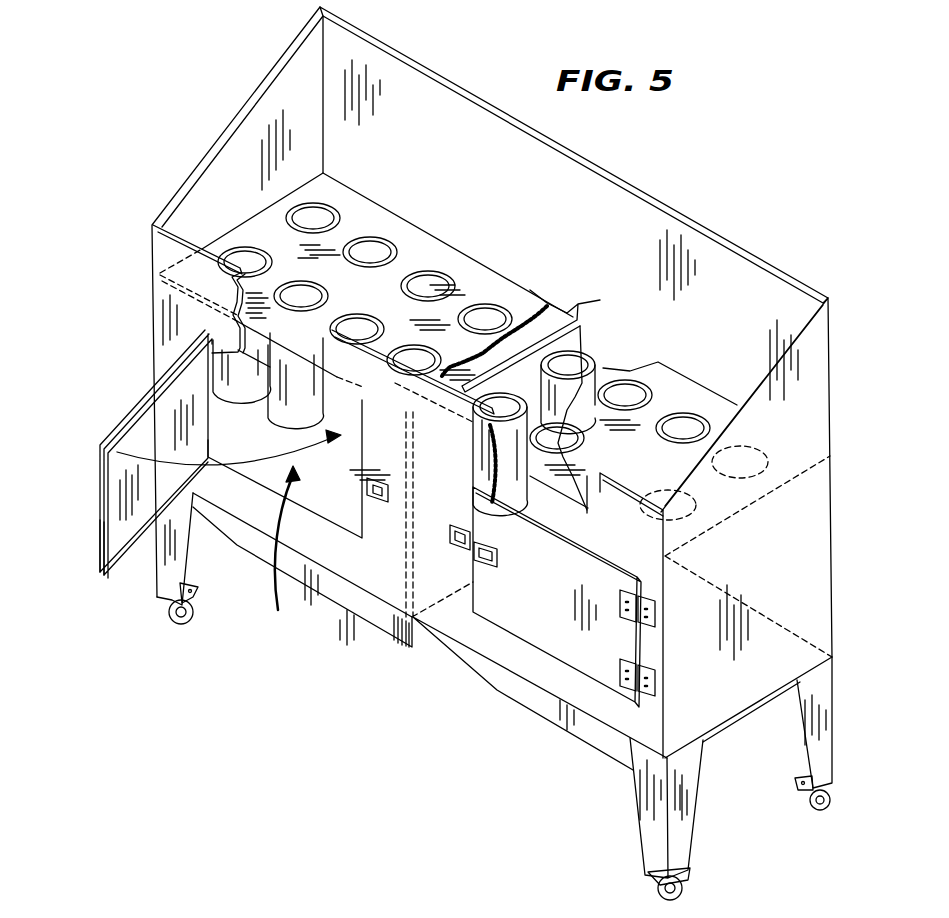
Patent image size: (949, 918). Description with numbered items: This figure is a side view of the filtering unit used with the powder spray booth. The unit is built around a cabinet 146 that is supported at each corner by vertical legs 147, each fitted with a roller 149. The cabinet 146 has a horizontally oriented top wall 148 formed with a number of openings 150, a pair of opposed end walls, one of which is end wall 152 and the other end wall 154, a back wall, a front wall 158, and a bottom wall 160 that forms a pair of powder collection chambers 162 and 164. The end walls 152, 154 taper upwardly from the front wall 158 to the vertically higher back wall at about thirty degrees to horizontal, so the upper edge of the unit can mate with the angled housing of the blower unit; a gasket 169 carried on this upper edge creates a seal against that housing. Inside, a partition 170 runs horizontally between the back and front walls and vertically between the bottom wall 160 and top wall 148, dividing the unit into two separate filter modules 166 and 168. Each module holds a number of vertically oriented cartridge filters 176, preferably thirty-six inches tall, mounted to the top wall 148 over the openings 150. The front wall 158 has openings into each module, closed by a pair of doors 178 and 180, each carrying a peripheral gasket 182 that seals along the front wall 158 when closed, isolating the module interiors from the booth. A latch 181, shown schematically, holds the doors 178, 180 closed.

The cabinet 146 is at (745, 151).
The vertical legs 147 is at (157, 578).
The top wall 148 is at (496, 276).
The roller 149 is at (178, 616).
The openings 150 is at (372, 250).
The end wall 152 is at (214, 145).
The end wall 154 is at (831, 370).
The front wall 158 is at (152, 333).
The bottom wall 160 is at (463, 622).
The powder collection chamber 162 is at (360, 616).
The powder collection chamber 164 is at (495, 690).
The filter module 166 is at (281, 559).
The filter module 168 is at (527, 483).
The gasket 169 is at (637, 190).
The partition 170 is at (573, 317).
The cartridge filters 176 is at (287, 432).
The door 178 is at (112, 447).
The door 180 is at (591, 660).
The latch 181 is at (490, 558).
The peripheral gasket 182 is at (100, 527).